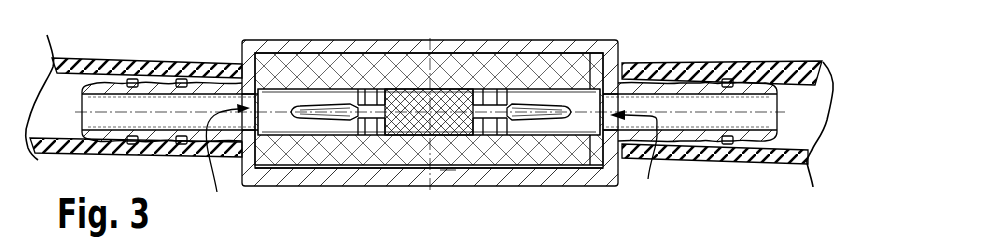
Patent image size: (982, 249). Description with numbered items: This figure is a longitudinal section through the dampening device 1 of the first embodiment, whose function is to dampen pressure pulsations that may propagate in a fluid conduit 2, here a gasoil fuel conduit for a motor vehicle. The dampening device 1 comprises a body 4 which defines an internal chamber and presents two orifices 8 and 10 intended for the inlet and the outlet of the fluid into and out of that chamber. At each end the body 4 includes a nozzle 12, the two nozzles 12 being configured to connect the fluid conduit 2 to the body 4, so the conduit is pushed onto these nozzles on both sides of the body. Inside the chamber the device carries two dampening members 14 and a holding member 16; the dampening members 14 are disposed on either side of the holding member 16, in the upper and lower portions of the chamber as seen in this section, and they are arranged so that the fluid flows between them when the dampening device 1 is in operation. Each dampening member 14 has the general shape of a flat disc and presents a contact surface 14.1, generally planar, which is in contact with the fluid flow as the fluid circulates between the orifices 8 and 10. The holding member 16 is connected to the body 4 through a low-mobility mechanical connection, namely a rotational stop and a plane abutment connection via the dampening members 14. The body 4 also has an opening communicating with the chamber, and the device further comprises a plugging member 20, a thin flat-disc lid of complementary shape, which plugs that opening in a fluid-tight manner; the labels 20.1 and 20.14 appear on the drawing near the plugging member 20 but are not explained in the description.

The dampening device 1 is at (755, 175).
The fluid conduit 2 is at (133, 72).
The body 4 is at (612, 52).
The orifice 8 is at (633, 156).
The orifice 10 is at (383, 107).
The nozzle 12 is at (203, 83).
The dampening member 14 is at (330, 75).
The contact surface 14.1 is at (368, 114).
The holding member 16 is at (287, 108).
The plugging member 20 is at (448, 173).
The heating conductor section 20.1 is at (538, 240).
The heating conductor connection 20.14 is at (370, 239).